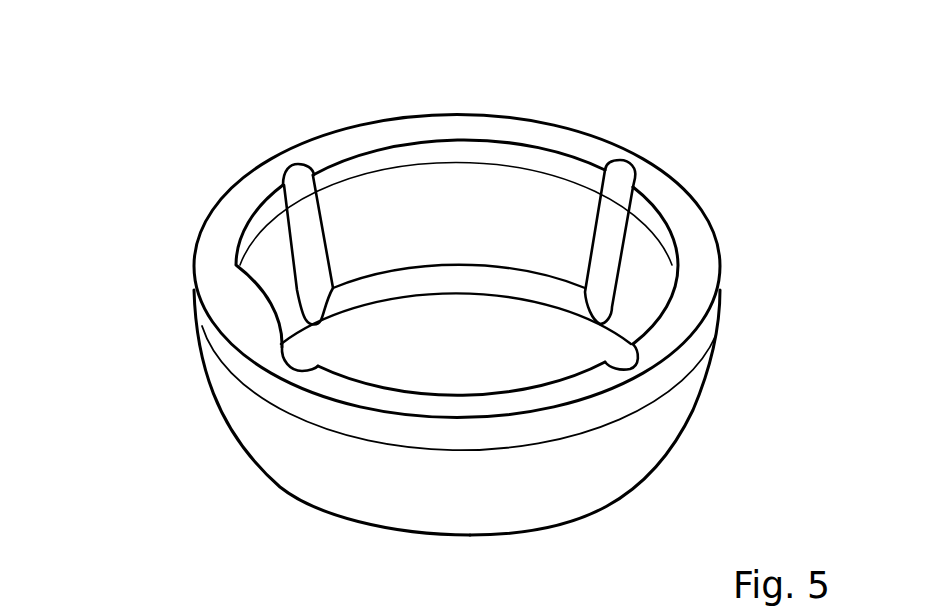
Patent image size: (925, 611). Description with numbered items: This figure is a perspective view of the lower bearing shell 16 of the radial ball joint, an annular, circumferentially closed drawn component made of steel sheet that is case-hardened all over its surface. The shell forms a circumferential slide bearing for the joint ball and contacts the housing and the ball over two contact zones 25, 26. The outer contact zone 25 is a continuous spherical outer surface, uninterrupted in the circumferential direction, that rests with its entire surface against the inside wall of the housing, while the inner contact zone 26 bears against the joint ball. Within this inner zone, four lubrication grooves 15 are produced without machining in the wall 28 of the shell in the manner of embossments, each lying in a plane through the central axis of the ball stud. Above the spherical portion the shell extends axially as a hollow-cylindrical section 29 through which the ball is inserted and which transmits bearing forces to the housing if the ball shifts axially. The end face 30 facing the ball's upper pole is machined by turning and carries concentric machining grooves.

The lubrication grooves 15 is at (299, 176).
The lower bearing shell 16 is at (452, 307).
The contact zone 25 is at (512, 507).
The contact zone 26 is at (473, 228).
The wall 28 is at (336, 464).
The hollow-cylindrical section 29 is at (240, 385).
The end face 30 is at (692, 268).